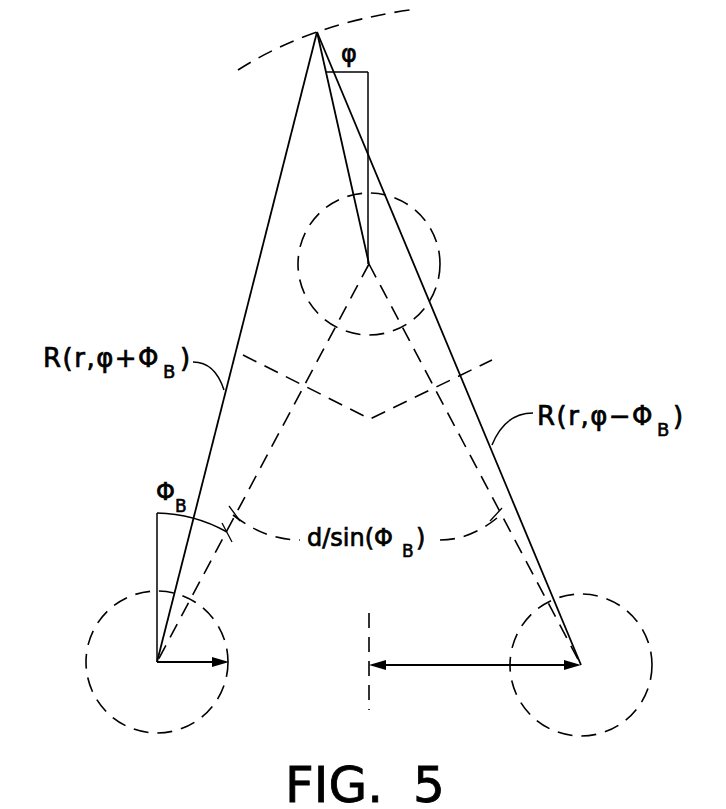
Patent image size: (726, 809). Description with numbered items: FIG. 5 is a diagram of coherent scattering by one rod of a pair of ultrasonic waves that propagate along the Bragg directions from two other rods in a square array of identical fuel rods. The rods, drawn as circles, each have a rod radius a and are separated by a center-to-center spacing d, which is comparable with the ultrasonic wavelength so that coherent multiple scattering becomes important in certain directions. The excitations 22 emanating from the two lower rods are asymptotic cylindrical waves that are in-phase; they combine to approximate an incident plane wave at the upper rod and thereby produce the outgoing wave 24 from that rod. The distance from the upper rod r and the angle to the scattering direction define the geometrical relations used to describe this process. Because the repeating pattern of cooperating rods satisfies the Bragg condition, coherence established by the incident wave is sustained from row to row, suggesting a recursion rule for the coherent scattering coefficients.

The excitations 22 is at (292, 360).
The outgoing wave 24 is at (270, 56).
The rod radius a is at (183, 664).
The center-to-center spacing d is at (482, 665).
The radius r is at (343, 148).